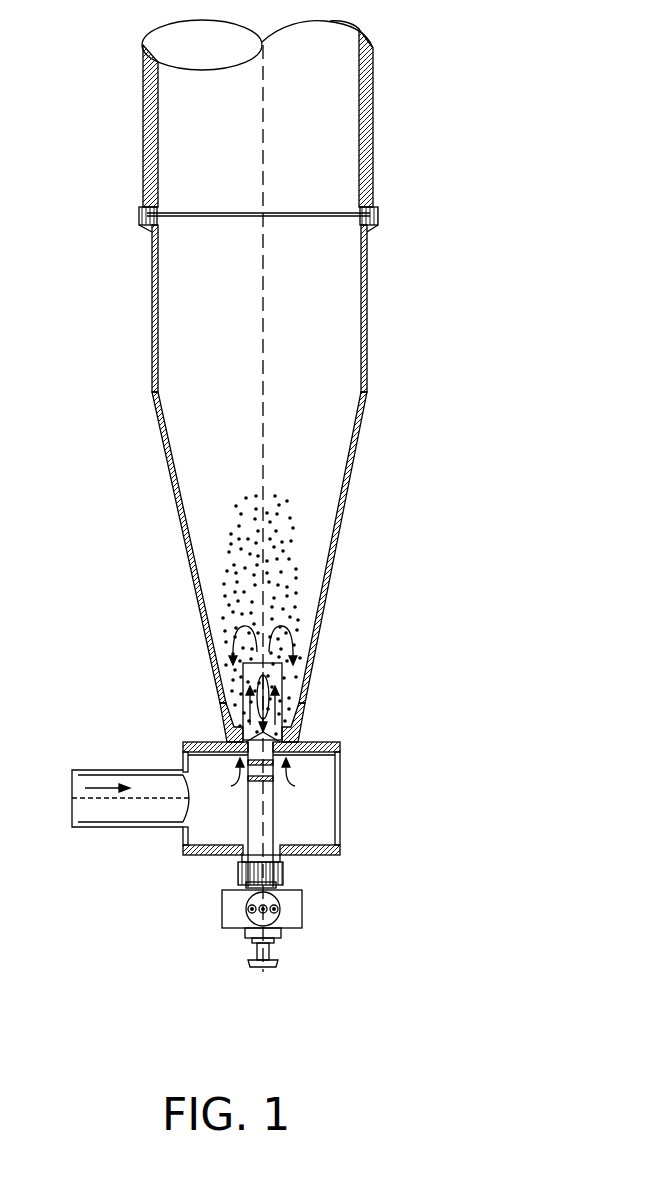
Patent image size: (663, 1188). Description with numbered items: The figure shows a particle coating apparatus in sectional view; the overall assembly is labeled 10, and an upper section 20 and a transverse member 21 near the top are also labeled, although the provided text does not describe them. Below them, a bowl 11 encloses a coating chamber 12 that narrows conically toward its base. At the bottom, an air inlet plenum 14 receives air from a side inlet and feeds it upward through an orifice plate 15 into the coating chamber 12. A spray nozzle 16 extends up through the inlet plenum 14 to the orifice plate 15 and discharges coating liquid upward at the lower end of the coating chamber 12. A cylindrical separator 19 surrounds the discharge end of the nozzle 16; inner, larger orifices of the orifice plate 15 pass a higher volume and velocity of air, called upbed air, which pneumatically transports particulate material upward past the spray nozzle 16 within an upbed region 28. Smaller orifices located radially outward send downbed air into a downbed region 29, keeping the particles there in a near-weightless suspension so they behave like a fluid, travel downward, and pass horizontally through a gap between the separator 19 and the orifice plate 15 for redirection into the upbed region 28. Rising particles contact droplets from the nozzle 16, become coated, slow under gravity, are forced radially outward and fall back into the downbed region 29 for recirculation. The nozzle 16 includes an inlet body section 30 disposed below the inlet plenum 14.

The fluidized bed apparatus 10 is at (368, 355).
The bowl 11 is at (152, 343).
The coating chamber 12 is at (190, 433).
The air inlet plenum 14 is at (340, 830).
The orifice plate 15 is at (343, 752).
The spray nozzle 16 is at (276, 805).
The cylindrical separator 19 is at (291, 681).
The expansion chamber 20 is at (373, 120).
The screen plate 21 is at (197, 213).
The upbed region 28 is at (293, 663).
The downbed region 29 is at (291, 665).
The inlet body section 30 is at (290, 893).